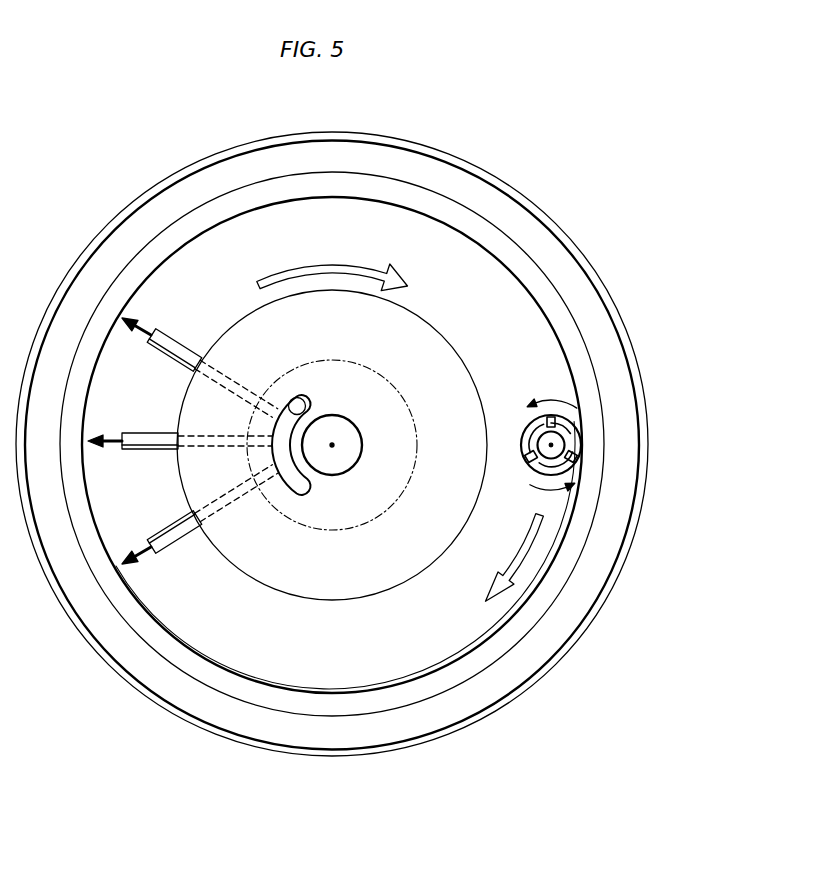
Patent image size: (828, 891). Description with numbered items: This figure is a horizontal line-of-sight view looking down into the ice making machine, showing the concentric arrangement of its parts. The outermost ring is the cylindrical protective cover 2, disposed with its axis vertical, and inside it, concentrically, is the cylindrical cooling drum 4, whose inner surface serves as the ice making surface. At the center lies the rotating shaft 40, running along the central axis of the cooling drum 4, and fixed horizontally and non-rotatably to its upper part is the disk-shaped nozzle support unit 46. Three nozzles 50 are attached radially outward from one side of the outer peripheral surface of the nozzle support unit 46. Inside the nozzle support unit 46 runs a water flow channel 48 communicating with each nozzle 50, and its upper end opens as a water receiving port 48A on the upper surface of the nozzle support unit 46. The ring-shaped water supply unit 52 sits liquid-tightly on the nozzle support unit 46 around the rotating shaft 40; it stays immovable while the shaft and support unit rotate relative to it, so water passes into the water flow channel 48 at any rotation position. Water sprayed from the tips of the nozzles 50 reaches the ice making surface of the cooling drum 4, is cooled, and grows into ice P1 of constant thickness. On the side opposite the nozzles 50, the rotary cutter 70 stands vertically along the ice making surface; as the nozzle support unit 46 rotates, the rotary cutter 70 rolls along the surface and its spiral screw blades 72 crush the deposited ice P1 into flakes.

The protective cover 2 is at (556, 224).
The cooling drum 4 is at (568, 290).
The rotating shaft 40 is at (363, 448).
The nozzle support unit 46 is at (418, 332).
The water flow channel 48 is at (238, 374).
The water receiving port 48A is at (305, 407).
The nozzles 50 is at (178, 343).
The water supply unit 52 is at (418, 440).
The rotary cutter 70 is at (577, 428).
The screw blades 72 is at (566, 440).
The ice P1 is at (331, 690).